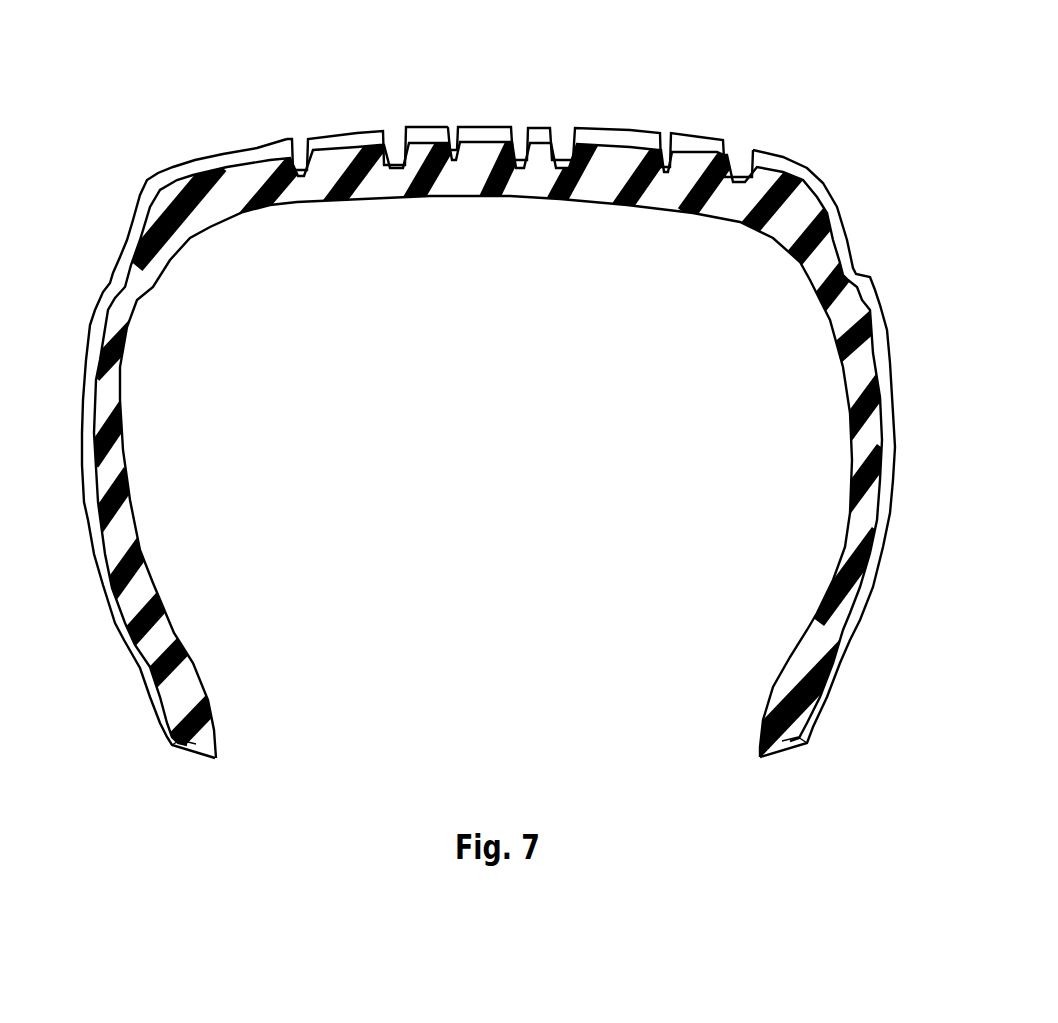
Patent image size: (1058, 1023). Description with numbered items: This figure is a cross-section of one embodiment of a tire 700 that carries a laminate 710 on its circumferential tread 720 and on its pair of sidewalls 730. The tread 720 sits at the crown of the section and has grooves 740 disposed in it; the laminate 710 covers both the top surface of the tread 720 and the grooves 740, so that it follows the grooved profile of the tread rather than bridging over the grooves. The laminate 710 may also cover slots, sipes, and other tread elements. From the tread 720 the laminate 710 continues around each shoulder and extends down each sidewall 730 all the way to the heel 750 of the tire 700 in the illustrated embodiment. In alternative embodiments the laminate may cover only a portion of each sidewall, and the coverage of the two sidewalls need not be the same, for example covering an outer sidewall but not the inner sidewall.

The tire 700 is at (183, 67).
The laminate 710 is at (488, 416).
The circumferential tread 720 is at (517, 86).
The sidewalls 730 is at (504, 451).
The grooves 740 is at (395, 122).
The heel 750 is at (484, 693).